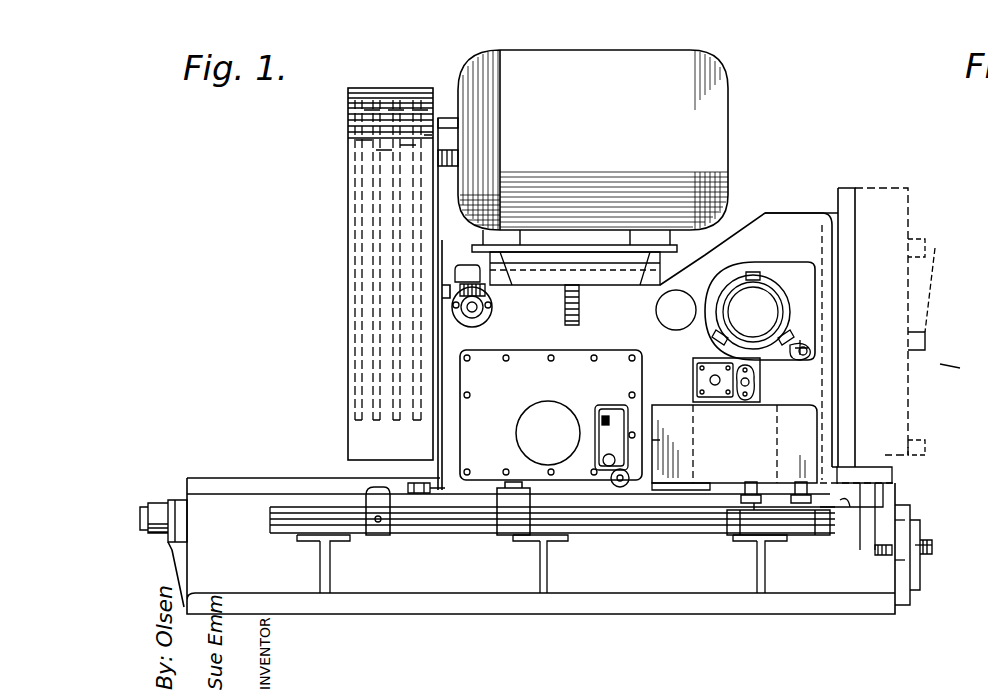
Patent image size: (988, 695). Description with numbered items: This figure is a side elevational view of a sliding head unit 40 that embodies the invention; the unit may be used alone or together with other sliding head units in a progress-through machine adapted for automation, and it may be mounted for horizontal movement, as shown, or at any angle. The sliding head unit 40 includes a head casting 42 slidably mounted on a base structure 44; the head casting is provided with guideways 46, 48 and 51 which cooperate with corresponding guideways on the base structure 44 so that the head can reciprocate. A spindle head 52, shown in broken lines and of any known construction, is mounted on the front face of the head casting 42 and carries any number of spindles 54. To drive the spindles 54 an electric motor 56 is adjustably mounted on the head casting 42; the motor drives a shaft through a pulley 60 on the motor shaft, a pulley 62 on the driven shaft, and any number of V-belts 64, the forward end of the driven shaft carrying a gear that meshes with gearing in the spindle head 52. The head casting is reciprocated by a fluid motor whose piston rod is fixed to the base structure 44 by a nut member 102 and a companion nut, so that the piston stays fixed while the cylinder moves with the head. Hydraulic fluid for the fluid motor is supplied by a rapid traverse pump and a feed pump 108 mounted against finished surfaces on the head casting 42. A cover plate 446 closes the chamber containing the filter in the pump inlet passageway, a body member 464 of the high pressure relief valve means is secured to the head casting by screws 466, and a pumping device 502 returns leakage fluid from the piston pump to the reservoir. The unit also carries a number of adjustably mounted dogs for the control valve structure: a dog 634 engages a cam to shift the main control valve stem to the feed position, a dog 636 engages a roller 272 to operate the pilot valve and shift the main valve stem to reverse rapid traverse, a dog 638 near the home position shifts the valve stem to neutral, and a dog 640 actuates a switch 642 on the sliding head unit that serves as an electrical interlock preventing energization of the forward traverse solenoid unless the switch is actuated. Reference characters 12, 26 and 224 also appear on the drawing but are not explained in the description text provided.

The grinding machine / workpiece region 12 is at (689, 388).
The wheel head 26 is at (962, 360).
The sliding head unit 40 is at (821, 188).
The head casting 42 is at (764, 222).
The base structure 44 is at (790, 590).
The guideway 46 is at (932, 569).
The guideway 48 is at (940, 530).
The guideway 51 is at (940, 550).
The spindle head 52 is at (888, 186).
The spindle 54 is at (935, 248).
The electric motor 56 is at (700, 80).
The pulley 60 is at (355, 168).
The pulley 62 is at (352, 308).
The V-belts 64 is at (352, 230).
The nut member 102 is at (163, 500).
The feed pump 108 is at (752, 271).
The shield 224 is at (661, 498).
The roller 272 is at (905, 457).
The cover plate 446 is at (700, 368).
The body member 464 is at (735, 402).
The screws 466 is at (749, 402).
The pumping device 502 is at (811, 338).
The dog 634 is at (722, 505).
The dog 636 is at (840, 500).
The dog 638 is at (517, 500).
The dog 640 is at (386, 488).
The switch 642 is at (610, 472).